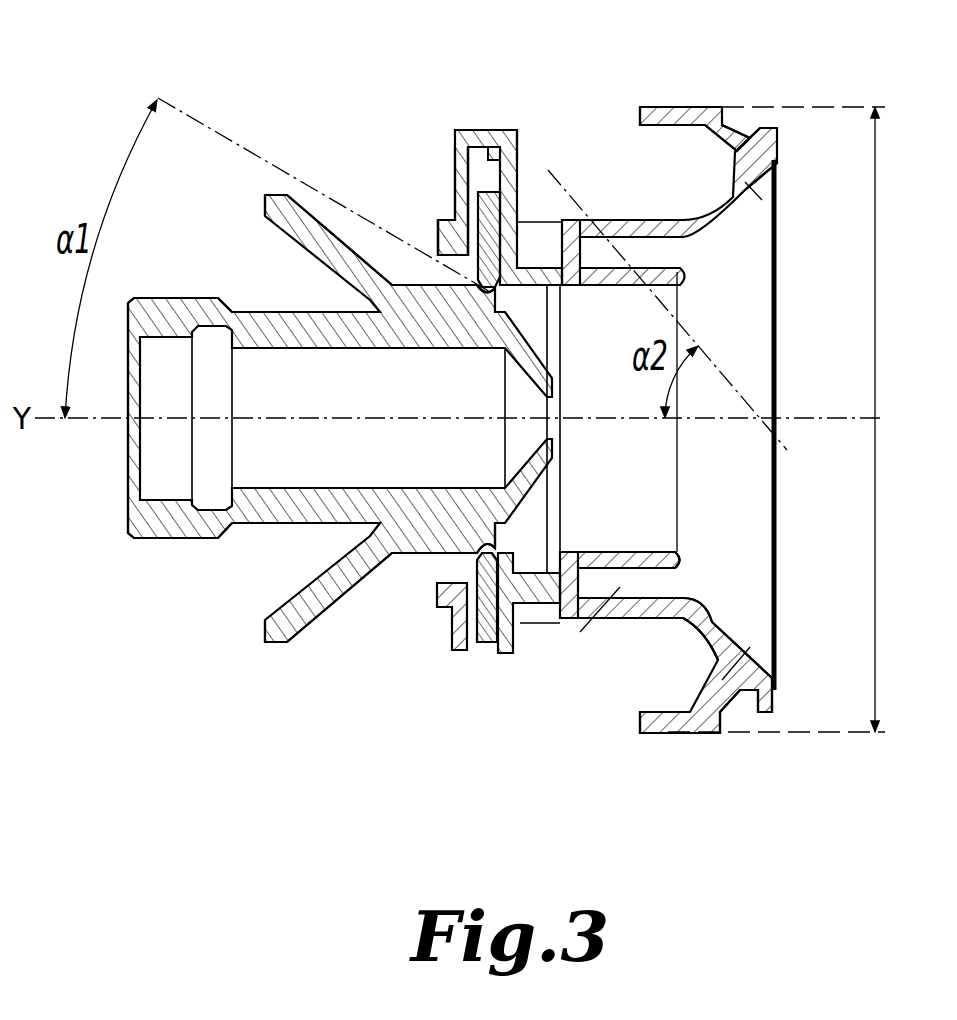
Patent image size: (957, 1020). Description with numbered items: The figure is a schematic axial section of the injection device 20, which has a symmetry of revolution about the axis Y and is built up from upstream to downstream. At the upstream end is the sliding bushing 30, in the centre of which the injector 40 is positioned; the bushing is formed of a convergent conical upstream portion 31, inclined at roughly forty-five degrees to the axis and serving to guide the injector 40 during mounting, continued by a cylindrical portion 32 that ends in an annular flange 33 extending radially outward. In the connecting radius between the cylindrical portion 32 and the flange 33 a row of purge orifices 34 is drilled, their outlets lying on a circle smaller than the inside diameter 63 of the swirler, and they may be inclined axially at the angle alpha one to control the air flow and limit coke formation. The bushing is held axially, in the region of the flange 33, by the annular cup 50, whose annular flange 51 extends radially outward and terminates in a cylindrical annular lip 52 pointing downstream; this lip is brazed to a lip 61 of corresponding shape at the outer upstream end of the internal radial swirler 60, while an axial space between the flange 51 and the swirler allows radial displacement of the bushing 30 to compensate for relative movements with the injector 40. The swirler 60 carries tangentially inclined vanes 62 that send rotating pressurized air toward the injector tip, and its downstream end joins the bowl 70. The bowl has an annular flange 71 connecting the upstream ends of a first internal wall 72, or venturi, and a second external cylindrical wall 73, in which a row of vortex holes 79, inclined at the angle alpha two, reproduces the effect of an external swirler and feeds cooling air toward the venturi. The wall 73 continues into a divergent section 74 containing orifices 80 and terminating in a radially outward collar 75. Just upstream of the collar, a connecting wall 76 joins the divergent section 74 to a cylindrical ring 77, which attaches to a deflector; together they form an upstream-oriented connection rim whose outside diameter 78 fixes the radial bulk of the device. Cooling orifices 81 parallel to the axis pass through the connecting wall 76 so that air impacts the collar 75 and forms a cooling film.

The injection device 20 is at (525, 745).
The sliding bushing 30 is at (350, 607).
The convergent conical upstream portion 31 is at (290, 643).
The cylindrical portion 32 is at (413, 545).
The annular flange 33 is at (490, 628).
The purge orifices 34 is at (485, 298).
The injector 40 is at (160, 538).
The annular cup 50 is at (425, 190).
The annular flange 51 is at (450, 160).
The cylindrical annular lip 52 is at (478, 147).
The internal radial swirler 60 is at (527, 165).
The lip 61 is at (503, 132).
The vanes 62 is at (545, 228).
The inside diameter 63 is at (547, 417).
The bowl 70 is at (748, 498).
The annular flange 71 is at (570, 583).
The first internal wall 72 is at (640, 552).
The second external cylindrical wall 73 is at (623, 620).
The divergent section 74 is at (708, 610).
The collar 75 is at (773, 698).
The connecting wall 76 is at (725, 703).
The cylindrical ring 77 is at (665, 107).
The outside diameter 78 is at (789, 419).
The vortex holes 79 is at (605, 600).
The orifices 80 is at (733, 195).
The cooling orifices 81 is at (718, 124).